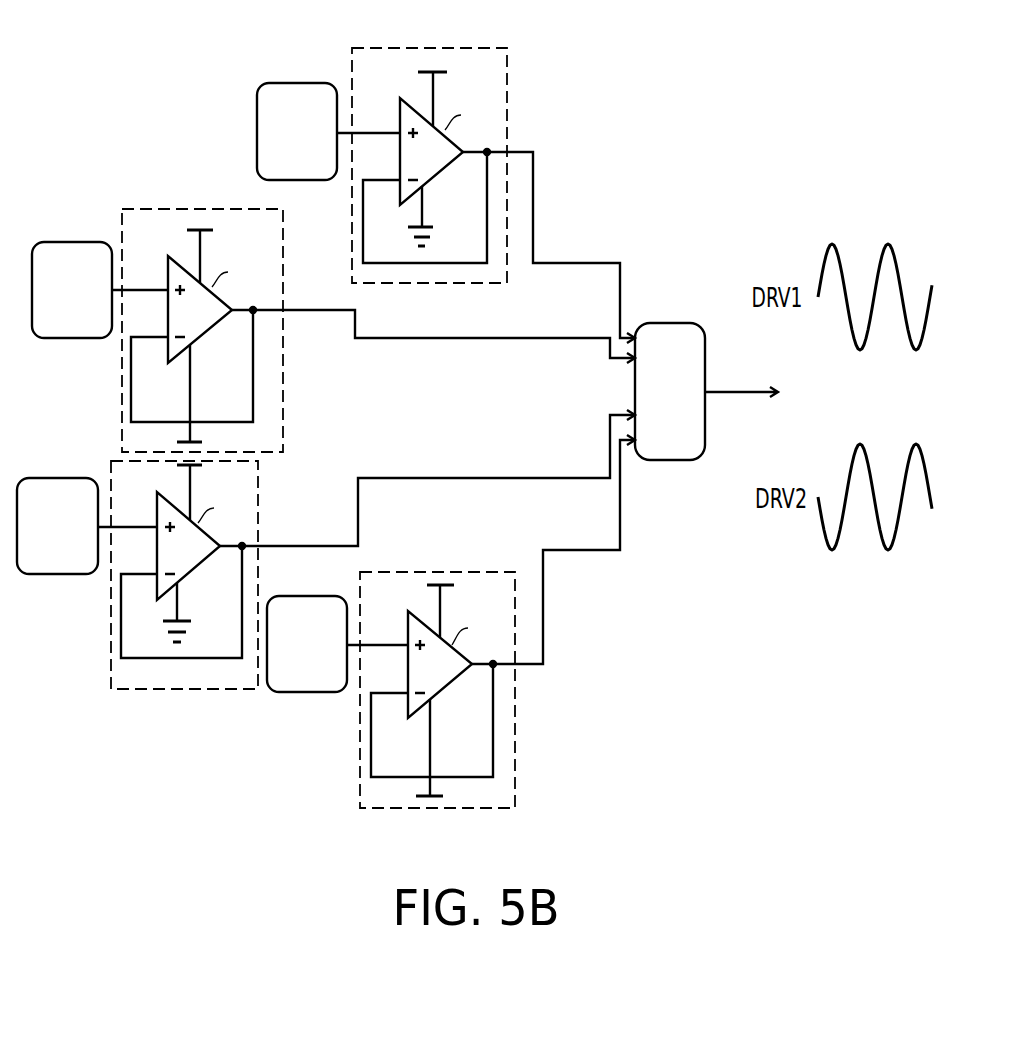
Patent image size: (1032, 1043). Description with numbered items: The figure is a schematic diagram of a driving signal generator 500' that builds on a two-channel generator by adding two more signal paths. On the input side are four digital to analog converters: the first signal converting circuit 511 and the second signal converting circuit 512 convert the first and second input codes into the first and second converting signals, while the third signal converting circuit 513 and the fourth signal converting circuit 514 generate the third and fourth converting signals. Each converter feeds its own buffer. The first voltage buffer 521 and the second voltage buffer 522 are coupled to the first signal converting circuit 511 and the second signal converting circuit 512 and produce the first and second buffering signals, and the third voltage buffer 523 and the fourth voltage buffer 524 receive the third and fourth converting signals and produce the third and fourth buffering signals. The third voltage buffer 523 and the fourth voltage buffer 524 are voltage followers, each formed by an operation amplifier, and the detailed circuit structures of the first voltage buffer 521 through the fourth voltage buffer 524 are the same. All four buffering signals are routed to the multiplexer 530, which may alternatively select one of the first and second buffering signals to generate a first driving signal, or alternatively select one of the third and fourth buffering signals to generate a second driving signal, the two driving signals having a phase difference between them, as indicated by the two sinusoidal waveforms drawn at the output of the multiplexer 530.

The driving signal generator 500' is at (475, 428).
The first signal converting circuit 511 is at (296, 83).
The second signal converting circuit 512 is at (307, 693).
The third signal converting circuit 513 is at (72, 242).
The fourth signal converting circuit 514 is at (58, 478).
The first voltage buffer 521 is at (418, 47).
The second voltage buffer 522 is at (423, 572).
The third voltage buffer 523 is at (168, 209).
The fourth voltage buffer 524 is at (262, 490).
The multiplexer 530 is at (670, 323).